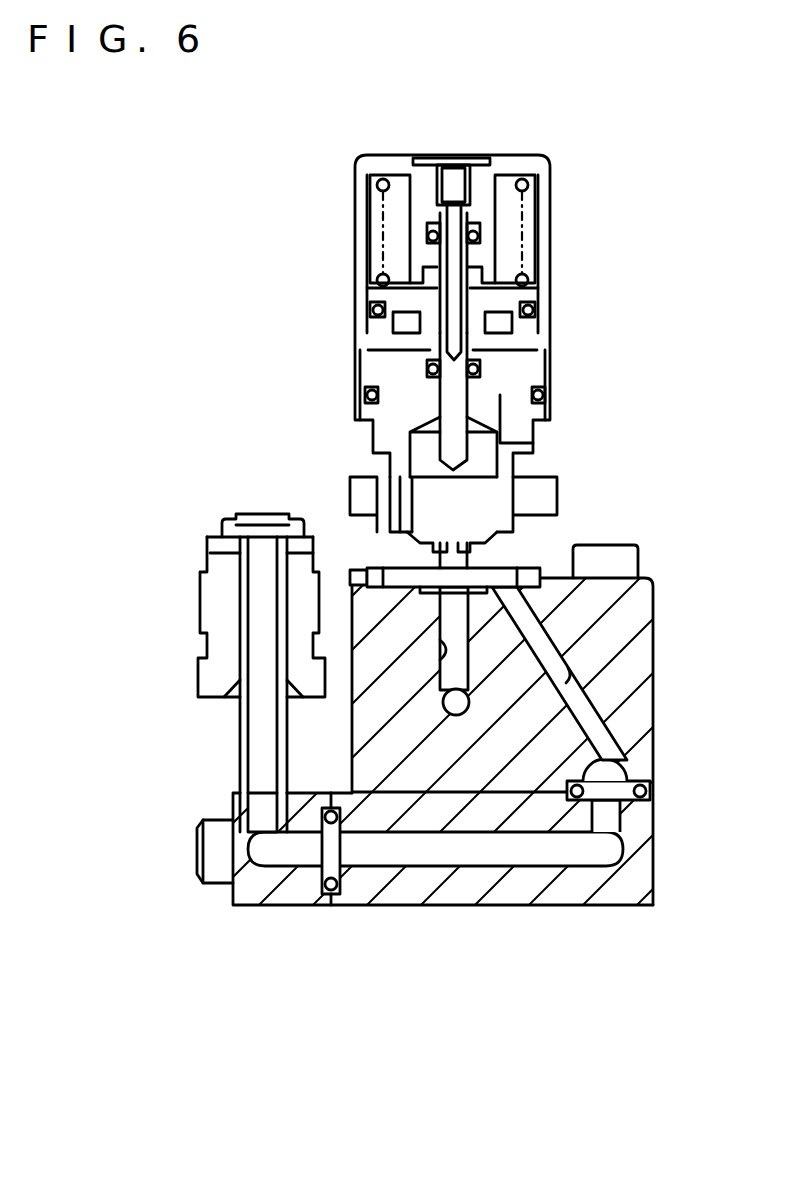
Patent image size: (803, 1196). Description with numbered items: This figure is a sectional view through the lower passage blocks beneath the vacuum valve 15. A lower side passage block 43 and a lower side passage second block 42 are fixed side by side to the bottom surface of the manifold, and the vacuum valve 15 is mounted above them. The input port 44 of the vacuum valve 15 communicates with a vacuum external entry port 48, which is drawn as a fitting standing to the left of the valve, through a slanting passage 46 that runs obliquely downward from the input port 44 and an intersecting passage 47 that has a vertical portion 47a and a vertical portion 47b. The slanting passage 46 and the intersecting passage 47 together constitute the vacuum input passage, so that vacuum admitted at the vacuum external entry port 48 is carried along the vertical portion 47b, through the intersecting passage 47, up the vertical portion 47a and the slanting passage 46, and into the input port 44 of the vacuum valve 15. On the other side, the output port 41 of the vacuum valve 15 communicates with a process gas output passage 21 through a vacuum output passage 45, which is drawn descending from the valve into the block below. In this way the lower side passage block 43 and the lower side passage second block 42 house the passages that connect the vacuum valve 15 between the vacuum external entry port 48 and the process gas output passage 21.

The vacuum valve 15 is at (560, 140).
The process gas output passage 21 is at (468, 710).
The output port 41 is at (462, 582).
The lower side passage second block 42 is at (257, 895).
The lower side passage block 43 is at (510, 905).
The input port 44 is at (645, 578).
The vacuum output passage 45 is at (443, 648).
The slanting passage 46 is at (528, 608).
The intersecting passage 47 is at (550, 857).
The vertical portion 47a is at (620, 812).
The vertical portion 47b is at (246, 722).
The vacuum external entry port 48 is at (258, 514).